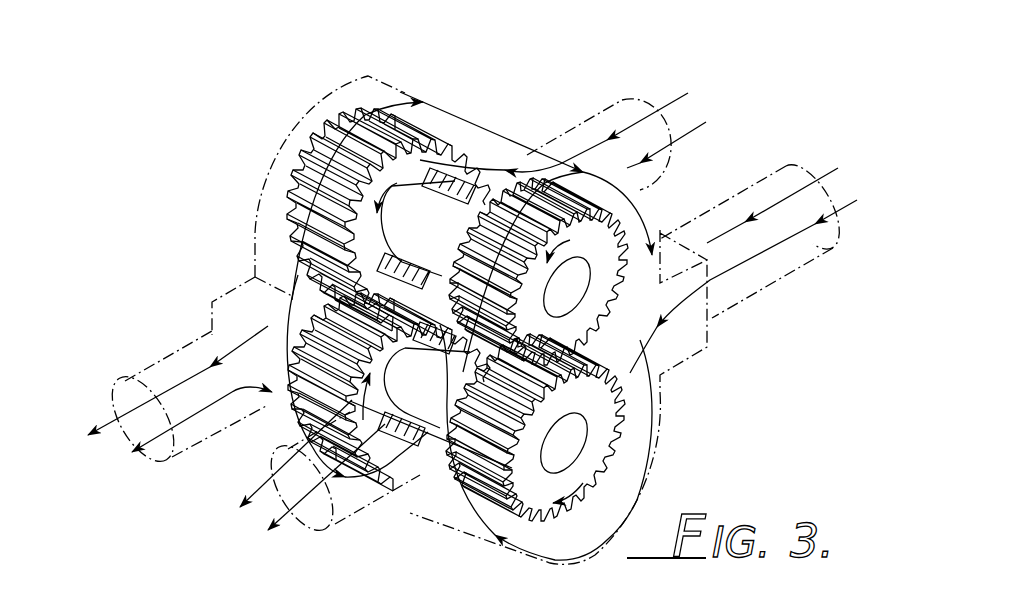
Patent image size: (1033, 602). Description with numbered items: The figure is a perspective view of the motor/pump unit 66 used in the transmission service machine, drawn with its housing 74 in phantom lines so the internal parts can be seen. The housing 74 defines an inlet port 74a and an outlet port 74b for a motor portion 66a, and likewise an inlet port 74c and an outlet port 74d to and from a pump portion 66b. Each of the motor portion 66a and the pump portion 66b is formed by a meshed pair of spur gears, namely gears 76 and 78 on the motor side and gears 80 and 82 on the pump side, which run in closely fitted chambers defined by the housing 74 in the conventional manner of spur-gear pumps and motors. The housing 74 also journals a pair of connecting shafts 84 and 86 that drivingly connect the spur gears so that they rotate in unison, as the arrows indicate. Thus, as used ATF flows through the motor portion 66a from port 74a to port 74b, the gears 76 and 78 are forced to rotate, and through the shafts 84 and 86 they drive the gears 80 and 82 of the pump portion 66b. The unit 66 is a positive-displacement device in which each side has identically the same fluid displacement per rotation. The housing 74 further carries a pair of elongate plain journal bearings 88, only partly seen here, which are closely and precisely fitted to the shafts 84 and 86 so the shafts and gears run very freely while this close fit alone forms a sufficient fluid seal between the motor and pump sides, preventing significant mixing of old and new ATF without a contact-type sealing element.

The motor/pump unit 66 is at (502, 56).
The motor portion 66a is at (292, 192).
The pump portion 66b is at (636, 390).
The housing 74 is at (368, 68).
The inlet port 74a is at (628, 100).
The outlet port 74b is at (121, 385).
The inlet port 74c is at (835, 247).
The outlet port 74d is at (334, 522).
The spur gear 76 is at (424, 171).
The spur gear 78 is at (422, 329).
The spur gear 80 is at (600, 234).
The spur gear 82 is at (590, 401).
The connecting shaft 84 is at (425, 227).
The connecting shaft 86 is at (427, 376).
The plain journal bearing 88 is at (457, 172).